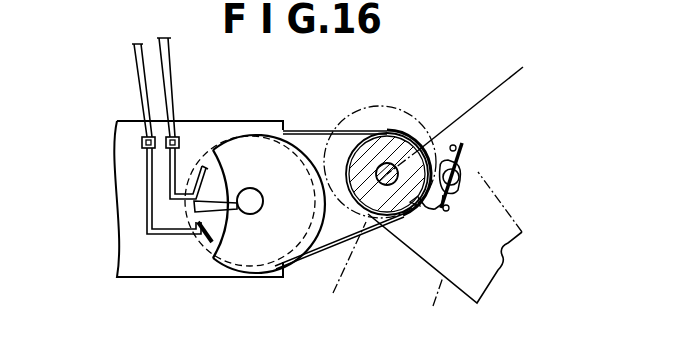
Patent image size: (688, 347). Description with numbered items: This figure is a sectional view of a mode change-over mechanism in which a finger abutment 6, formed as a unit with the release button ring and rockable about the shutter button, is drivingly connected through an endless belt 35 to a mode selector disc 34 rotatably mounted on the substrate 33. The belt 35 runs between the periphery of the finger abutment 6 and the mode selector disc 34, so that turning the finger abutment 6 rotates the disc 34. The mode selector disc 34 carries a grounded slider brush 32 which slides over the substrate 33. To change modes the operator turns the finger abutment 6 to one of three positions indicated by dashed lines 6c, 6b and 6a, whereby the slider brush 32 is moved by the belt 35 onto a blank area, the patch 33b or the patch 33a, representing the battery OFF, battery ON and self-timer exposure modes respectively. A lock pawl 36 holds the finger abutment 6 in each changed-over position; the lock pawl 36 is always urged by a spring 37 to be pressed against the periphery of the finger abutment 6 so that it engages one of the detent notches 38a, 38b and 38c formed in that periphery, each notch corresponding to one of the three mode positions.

The substrate 33 is at (178, 276).
The patch 33a is at (177, 186).
The patch 33b is at (158, 235).
The mode selector disc 34 is at (243, 157).
The slider brush 32 is at (233, 227).
The endless belt 35 is at (323, 246).
The detent notch 38a is at (371, 216).
The detent notch 38b is at (418, 137).
The detent notch 38c is at (411, 210).
The finger abutment 6 is at (415, 148).
The dashed line position 6a is at (350, 277).
The dashed line position 6b is at (521, 68).
The dashed line position 6c is at (437, 307).
The spring 37 is at (462, 163).
The lock pawl 36 is at (434, 213).